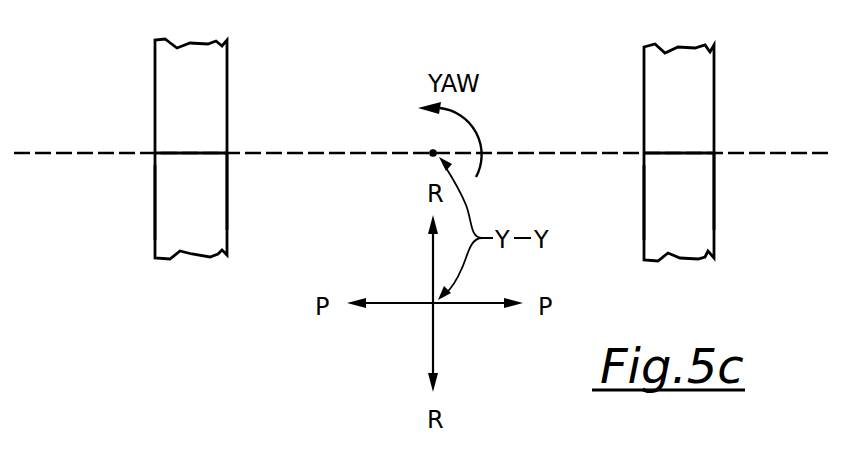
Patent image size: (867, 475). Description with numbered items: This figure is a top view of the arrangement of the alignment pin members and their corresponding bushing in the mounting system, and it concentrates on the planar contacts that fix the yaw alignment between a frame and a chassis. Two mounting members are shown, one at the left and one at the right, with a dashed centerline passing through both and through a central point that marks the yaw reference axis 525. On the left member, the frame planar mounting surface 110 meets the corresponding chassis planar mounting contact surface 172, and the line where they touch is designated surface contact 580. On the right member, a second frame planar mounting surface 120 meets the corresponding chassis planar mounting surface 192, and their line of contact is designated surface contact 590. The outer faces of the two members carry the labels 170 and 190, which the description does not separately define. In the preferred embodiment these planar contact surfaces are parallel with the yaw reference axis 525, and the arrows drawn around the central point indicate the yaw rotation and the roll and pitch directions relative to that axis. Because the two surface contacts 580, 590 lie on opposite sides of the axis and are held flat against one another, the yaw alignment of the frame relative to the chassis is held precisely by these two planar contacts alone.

The frame planar mounting surface 110 is at (183, 153).
The second structure/beam 120 is at (677, 153).
The first surface of first structure 170 is at (155, 200).
The chassis planar mounting contact surface 172 is at (204, 153).
The first surface of second structure 190 is at (644, 208).
The chassis planar mounting surface 192 is at (695, 153).
The surface contact 580 is at (155, 153).
The surface contact 590 is at (644, 153).
The yaw reference axis 525 is at (433, 153).